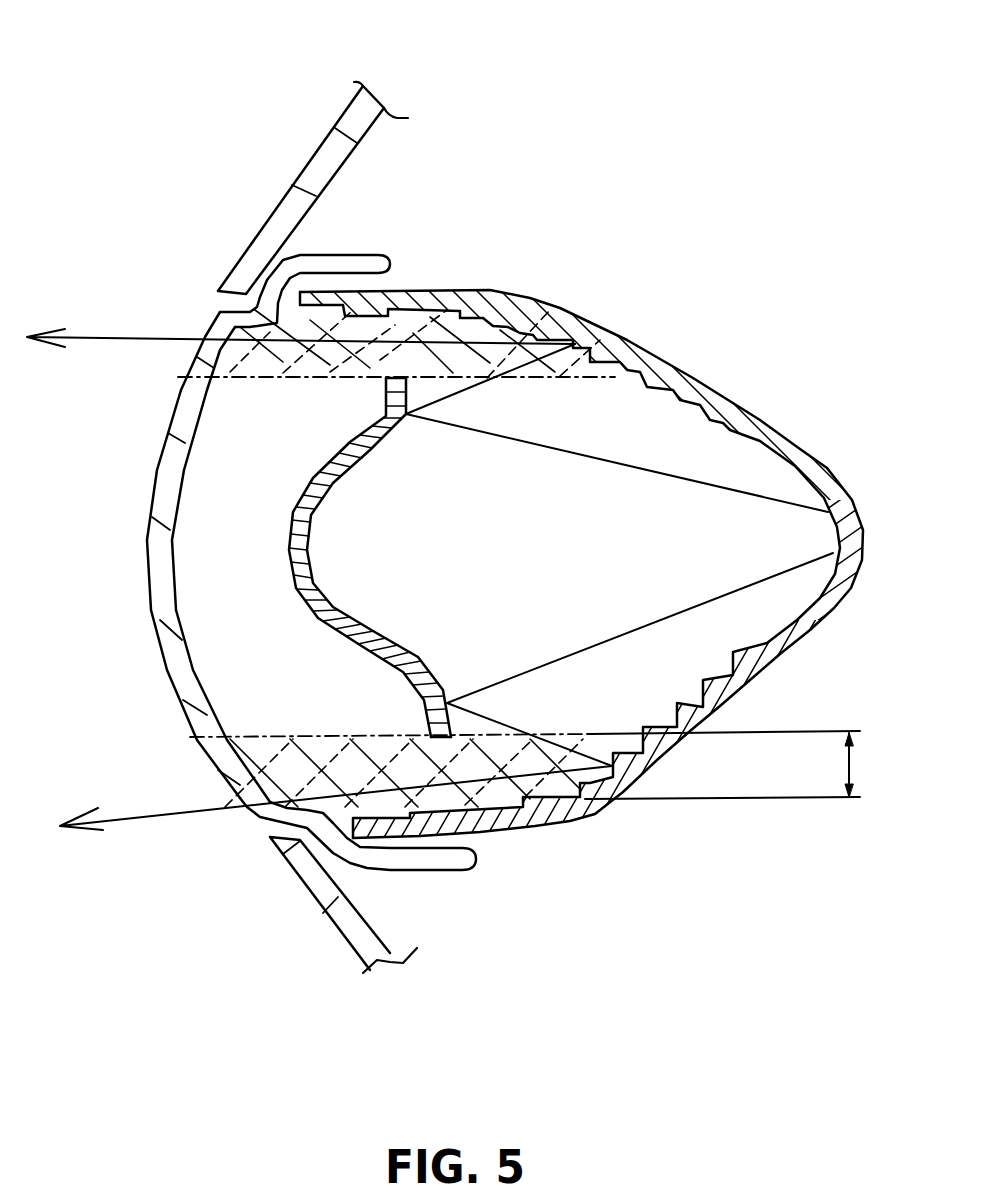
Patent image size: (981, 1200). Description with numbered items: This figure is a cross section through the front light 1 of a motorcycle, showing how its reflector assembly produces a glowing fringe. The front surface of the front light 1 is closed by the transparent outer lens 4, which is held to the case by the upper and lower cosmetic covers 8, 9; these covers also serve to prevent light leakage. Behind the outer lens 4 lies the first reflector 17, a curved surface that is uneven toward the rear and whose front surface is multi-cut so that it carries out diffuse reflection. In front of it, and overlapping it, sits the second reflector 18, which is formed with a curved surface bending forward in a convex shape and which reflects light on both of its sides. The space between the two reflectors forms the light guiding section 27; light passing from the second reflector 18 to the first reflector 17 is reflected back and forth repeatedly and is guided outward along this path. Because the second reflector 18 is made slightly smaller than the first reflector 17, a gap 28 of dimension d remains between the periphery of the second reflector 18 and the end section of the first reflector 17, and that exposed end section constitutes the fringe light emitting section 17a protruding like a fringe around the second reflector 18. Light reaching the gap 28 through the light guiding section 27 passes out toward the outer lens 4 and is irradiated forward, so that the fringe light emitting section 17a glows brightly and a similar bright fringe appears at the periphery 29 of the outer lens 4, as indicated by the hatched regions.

The front light 1 is at (210, 110).
The outer lens 4 is at (148, 560).
The cosmetic cover 8 is at (303, 166).
The cosmetic cover 9 is at (300, 873).
The first reflector 17 is at (691, 377).
The fringe light emitting section 17a is at (383, 260).
The second reflector 18 is at (288, 547).
The light guiding section 27 is at (552, 550).
The gap 28 is at (313, 380).
The periphery of the outer lens 29 is at (192, 379).
The dimension of the gap d is at (736, 765).